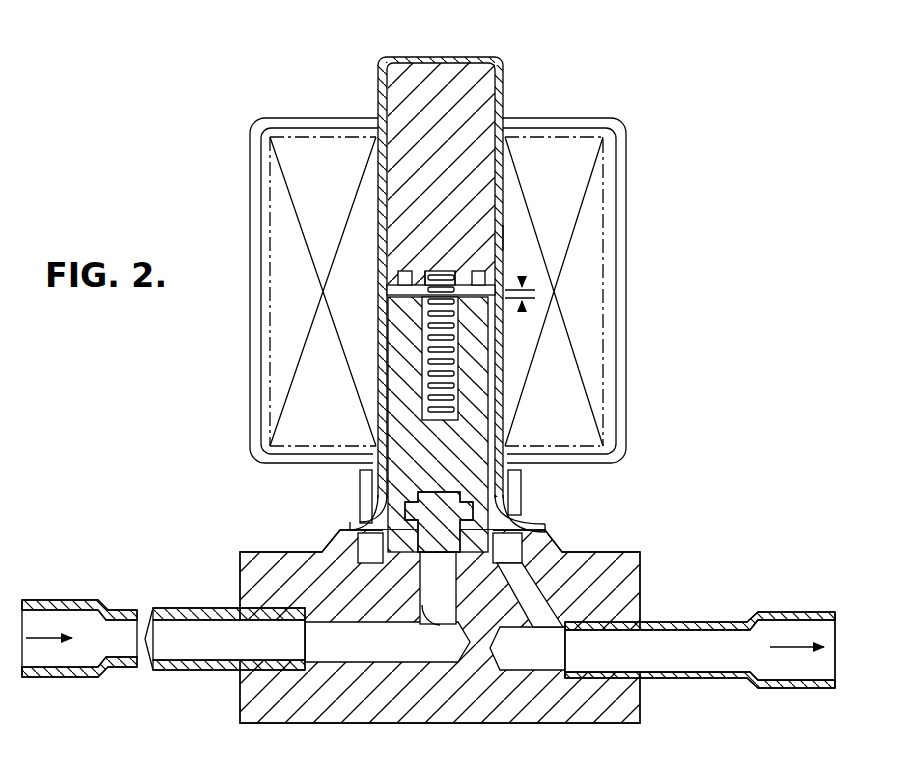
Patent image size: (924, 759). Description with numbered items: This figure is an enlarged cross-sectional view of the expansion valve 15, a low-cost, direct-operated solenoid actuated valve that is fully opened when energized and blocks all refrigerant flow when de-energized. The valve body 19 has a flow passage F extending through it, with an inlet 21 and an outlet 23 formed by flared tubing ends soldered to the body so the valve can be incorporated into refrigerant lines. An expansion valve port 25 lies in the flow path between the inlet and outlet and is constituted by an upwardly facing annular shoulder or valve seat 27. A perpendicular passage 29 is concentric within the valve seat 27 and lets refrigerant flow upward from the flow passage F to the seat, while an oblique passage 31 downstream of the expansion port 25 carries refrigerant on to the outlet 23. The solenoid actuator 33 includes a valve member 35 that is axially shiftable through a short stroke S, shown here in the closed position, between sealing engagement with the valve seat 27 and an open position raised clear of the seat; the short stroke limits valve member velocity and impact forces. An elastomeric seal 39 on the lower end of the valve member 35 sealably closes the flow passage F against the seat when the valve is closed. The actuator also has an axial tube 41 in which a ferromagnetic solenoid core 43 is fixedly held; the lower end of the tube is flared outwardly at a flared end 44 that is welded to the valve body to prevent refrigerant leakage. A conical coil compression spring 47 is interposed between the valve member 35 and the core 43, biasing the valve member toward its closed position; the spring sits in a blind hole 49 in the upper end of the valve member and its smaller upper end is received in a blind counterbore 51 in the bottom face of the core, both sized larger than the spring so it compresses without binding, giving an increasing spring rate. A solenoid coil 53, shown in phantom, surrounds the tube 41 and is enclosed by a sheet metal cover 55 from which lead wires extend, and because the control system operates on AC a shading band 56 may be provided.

The expansion valve 15 is at (758, 133).
The valve body 19 is at (496, 723).
The inlet 21 is at (88, 662).
The outlet 23 is at (700, 676).
The expansion valve port 25 is at (445, 587).
The valve seat 27 is at (398, 566).
The perpendicular passage 29 is at (440, 630).
The oblique passage 31 is at (550, 615).
The solenoid actuator 33 is at (629, 118).
The valve member 35 is at (456, 458).
The elastomeric seal 39 is at (400, 548).
The axial tube 41 is at (498, 60).
The solenoid core 43 is at (474, 93).
The flared end 44 is at (363, 505).
The conical coil compression spring 47 is at (450, 320).
The blind hole 49 is at (430, 320).
The blind counterbore 51 is at (434, 276).
The solenoid coil 53 is at (566, 294).
The sheet metal cover 55 is at (604, 253).
The shading band 56 is at (506, 234).
The flow passage F is at (350, 650).
The stroke S is at (520, 281).